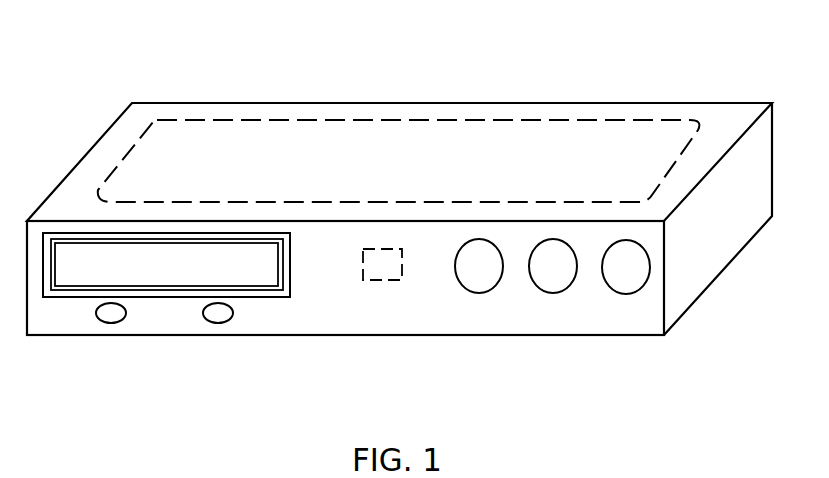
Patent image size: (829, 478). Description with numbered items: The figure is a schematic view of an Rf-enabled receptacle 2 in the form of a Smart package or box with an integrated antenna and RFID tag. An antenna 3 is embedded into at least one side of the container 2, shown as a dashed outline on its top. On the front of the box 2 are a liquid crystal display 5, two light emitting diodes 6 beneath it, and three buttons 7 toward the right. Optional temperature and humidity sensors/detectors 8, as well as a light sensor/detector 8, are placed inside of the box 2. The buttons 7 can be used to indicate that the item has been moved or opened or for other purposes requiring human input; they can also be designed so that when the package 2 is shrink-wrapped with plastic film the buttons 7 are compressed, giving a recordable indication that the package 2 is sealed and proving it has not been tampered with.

The Rf-enabled receptacle 2 is at (344, 103).
The antenna 3 is at (119, 163).
The liquid crystal display 5 is at (82, 278).
The light emitting diodes 6 is at (164, 363).
The buttons 7 is at (622, 280).
The temperature and humidity sensors/detectors 8 is at (382, 268).